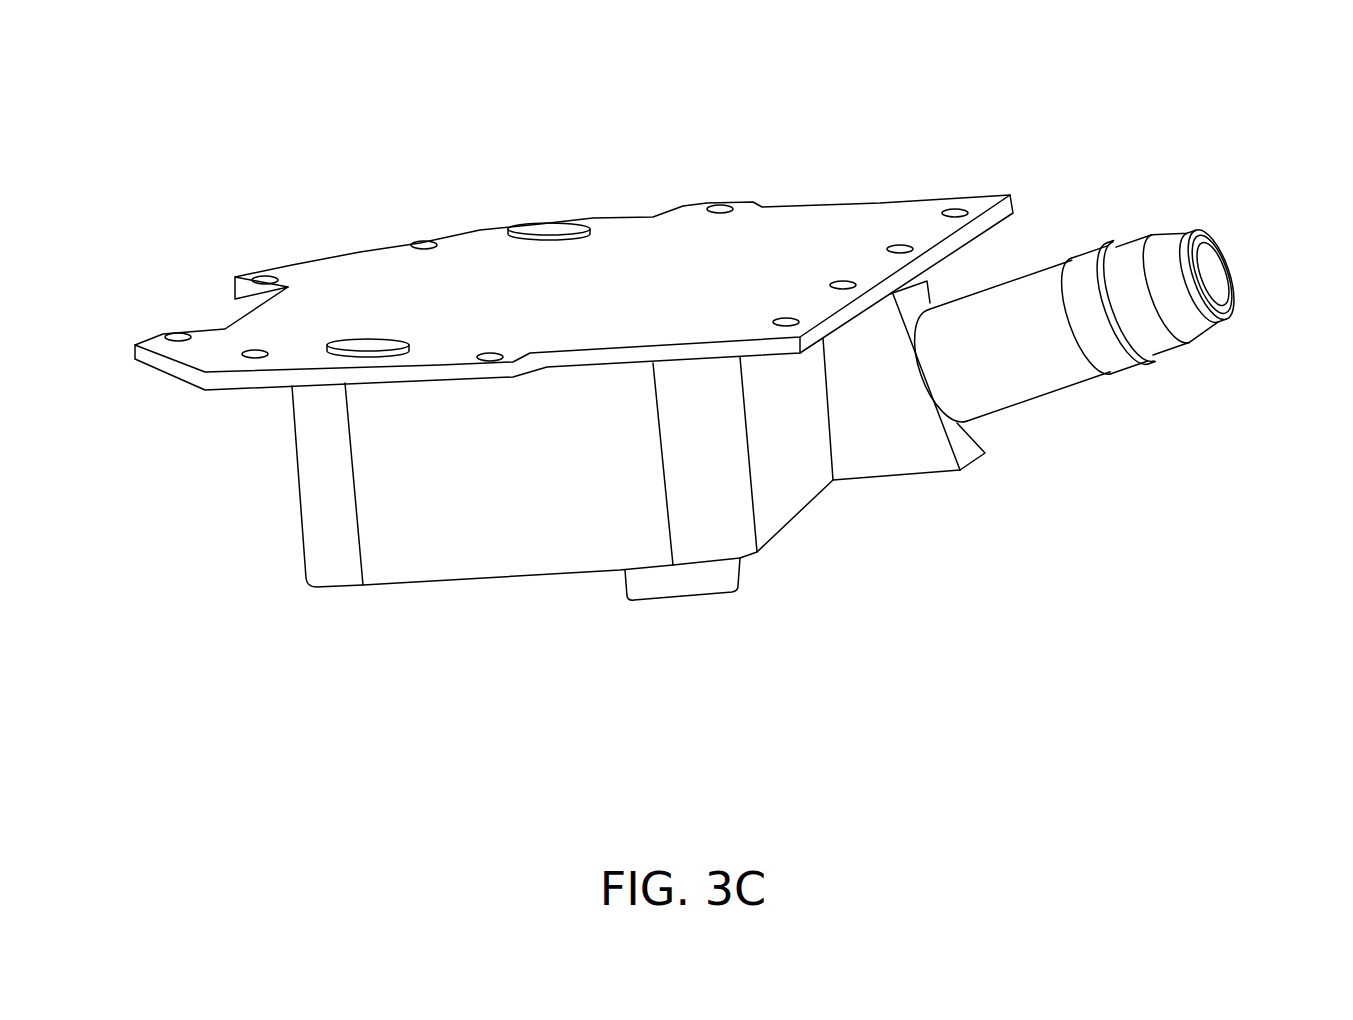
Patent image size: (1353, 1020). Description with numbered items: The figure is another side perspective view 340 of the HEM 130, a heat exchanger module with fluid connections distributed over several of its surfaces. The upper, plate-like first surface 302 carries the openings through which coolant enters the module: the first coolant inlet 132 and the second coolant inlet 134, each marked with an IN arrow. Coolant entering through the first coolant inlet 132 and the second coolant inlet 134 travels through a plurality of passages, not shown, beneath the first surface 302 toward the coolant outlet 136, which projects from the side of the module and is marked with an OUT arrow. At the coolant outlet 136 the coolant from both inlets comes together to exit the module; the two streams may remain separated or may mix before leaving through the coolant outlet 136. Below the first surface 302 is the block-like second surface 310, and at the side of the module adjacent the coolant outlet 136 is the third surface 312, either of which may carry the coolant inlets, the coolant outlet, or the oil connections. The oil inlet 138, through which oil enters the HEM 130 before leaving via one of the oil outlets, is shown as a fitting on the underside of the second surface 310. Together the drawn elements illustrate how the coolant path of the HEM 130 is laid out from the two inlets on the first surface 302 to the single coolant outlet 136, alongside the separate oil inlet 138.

The side perspective view 340 is at (124, 146).
The HEM 130 is at (831, 182).
The first surface 302 is at (675, 253).
The coolant inlet 1 132 is at (388, 340).
The coolant inlet 2 134 is at (543, 222).
The coolant outlet 136 is at (1247, 263).
The second surface 310 is at (483, 581).
The third surface 312 is at (957, 435).
The oil inlet 138 is at (713, 602).